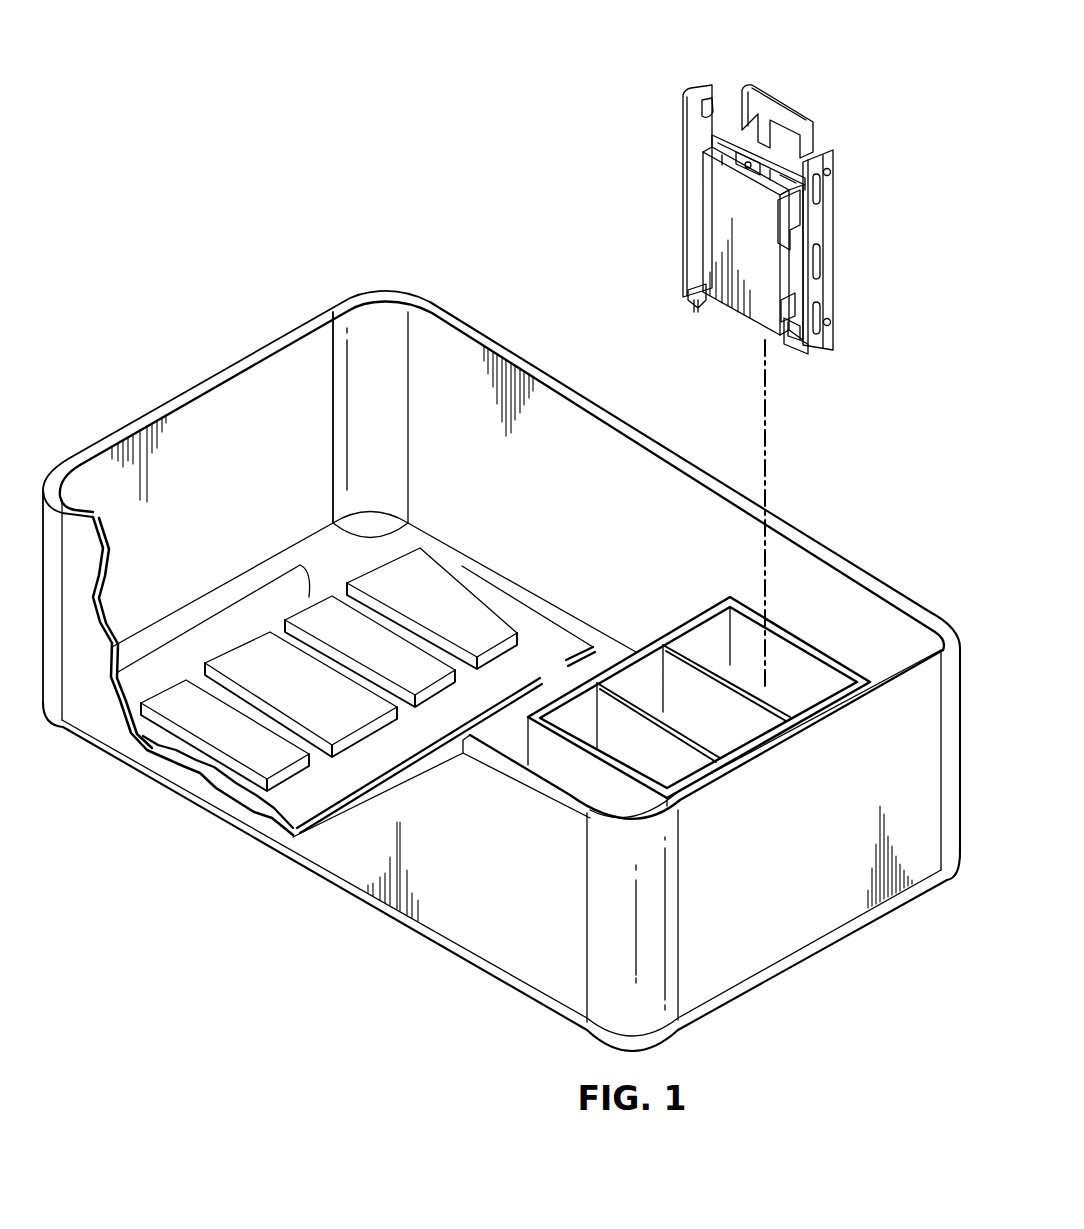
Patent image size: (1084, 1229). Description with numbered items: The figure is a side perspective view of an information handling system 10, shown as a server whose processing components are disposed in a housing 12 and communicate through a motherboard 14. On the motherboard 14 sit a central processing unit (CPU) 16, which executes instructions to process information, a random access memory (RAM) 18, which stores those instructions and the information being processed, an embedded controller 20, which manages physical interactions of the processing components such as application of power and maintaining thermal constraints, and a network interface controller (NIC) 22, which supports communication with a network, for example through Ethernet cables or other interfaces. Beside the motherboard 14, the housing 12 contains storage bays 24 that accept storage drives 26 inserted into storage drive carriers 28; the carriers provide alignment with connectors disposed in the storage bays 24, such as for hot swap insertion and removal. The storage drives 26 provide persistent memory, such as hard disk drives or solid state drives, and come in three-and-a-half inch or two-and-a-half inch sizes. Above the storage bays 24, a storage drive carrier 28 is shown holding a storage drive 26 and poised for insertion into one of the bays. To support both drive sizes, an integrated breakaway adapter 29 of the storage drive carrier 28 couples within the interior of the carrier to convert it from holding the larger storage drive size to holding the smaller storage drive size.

The information handling system 10 is at (501, 529).
The housing 12 is at (195, 803).
The motherboard 14 is at (472, 592).
The central processing unit (CPU) 16 is at (502, 633).
The random access memory (RAM) 18 is at (312, 606).
The embedded controller 20 is at (250, 652).
The network interface controller (NIC) 22 is at (165, 700).
The storage bay 24 is at (565, 715).
The storage drive 26 is at (750, 305).
The storage drive carrier 28 is at (790, 112).
The integrated breakaway adapter 29 is at (794, 332).